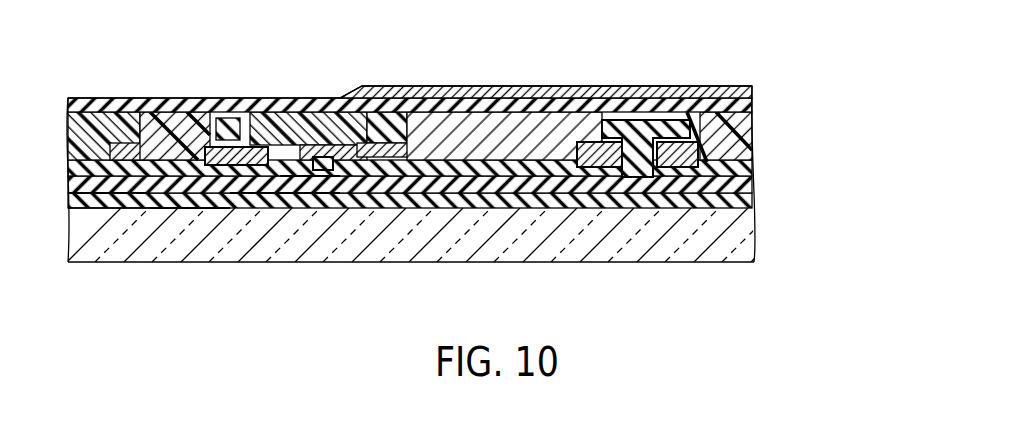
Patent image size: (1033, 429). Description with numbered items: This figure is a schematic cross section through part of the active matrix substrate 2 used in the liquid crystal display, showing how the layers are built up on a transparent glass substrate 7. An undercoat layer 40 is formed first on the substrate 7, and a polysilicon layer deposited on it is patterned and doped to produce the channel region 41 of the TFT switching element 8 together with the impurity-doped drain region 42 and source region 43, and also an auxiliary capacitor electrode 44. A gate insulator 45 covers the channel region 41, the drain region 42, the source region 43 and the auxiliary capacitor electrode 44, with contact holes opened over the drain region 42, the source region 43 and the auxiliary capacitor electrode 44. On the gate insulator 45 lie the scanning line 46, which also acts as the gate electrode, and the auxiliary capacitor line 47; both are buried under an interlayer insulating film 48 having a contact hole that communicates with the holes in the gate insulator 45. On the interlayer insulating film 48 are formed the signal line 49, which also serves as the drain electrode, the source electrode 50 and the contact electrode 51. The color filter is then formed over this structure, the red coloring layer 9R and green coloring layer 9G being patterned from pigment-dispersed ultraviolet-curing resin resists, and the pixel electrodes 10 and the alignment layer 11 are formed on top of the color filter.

The active matrix substrate 2 is at (703, 56).
The transparent substrate 7 is at (144, 255).
The switching element 8 is at (228, 128).
The green coloring layer 9G is at (101, 121).
The red coloring layer 9R is at (747, 125).
The pixel electrode 10 is at (456, 91).
The alignment layer 11 is at (555, 90).
The undercoat layer 40 is at (753, 199).
The channel region 41 is at (246, 203).
The drain region 42 is at (190, 208).
The source region 43 is at (303, 203).
The auxiliary capacitor electrode 44 is at (612, 195).
The gate insulator 45 is at (92, 200).
The scanning line 46 is at (245, 152).
The auxiliary capacitor line 47 is at (700, 156).
The interlayer insulating film 48 is at (751, 176).
The signal line 49 is at (157, 137).
The source electrode 50 is at (297, 137).
The contact electrode 51 is at (655, 126).